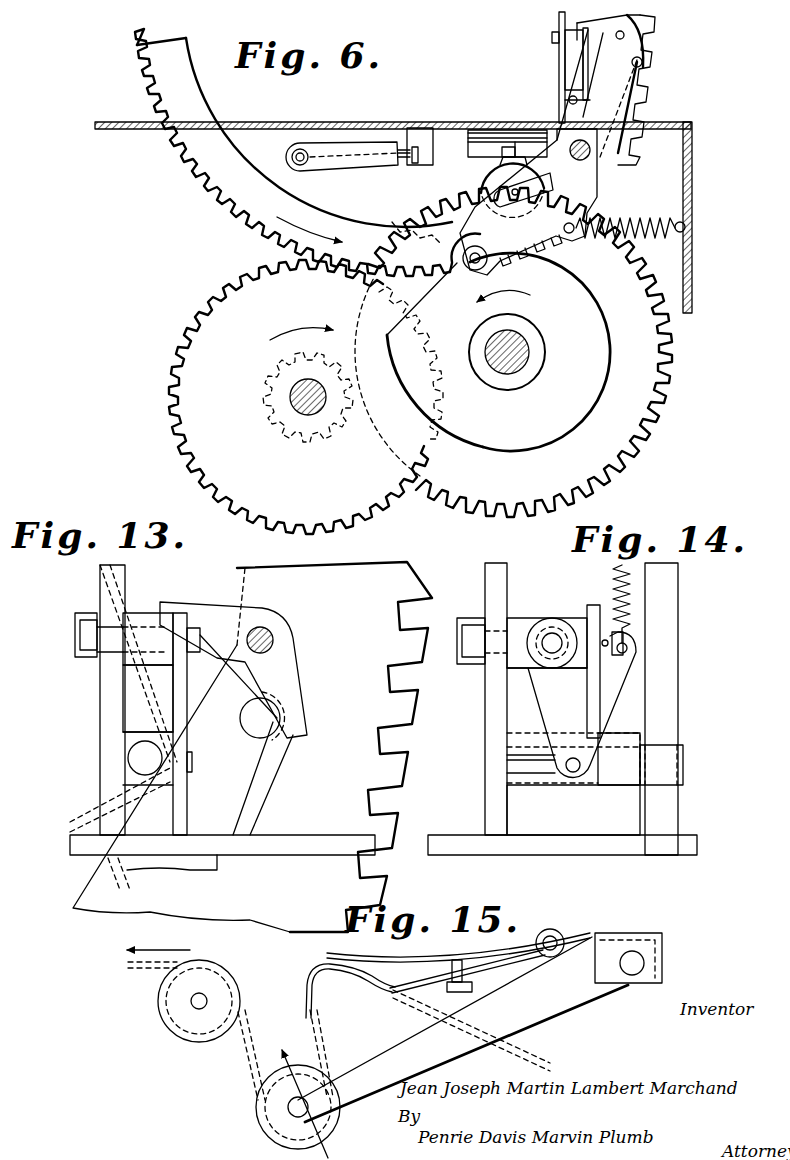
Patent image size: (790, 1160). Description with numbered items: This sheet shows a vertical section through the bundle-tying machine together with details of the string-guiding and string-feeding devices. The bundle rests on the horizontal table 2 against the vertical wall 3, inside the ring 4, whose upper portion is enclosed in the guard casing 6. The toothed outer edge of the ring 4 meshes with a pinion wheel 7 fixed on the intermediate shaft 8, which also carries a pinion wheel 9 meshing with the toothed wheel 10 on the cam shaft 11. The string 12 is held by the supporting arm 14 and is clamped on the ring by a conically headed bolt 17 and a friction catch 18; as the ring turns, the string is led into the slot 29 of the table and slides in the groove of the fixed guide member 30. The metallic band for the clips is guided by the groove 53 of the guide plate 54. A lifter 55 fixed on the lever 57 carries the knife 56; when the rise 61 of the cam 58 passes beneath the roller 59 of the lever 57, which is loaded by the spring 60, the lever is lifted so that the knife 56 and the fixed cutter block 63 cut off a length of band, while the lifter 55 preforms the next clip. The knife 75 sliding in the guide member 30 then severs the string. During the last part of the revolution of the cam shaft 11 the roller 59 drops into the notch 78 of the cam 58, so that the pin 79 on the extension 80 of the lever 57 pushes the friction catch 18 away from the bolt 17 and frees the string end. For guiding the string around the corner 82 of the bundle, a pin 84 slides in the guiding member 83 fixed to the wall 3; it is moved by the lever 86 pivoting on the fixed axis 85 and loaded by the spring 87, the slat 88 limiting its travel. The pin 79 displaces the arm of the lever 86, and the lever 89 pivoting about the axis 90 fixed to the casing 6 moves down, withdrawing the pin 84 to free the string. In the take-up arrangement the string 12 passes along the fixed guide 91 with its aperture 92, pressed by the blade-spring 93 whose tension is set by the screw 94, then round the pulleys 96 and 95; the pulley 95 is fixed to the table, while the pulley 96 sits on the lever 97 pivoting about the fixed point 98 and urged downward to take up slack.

In FIG. 6, the horizontal table 2 is at (332, 122).
In FIG. 13, the horizontal table 2 is at (280, 842).
In FIG. 14, the horizontal table 2 is at (466, 845).
In FIG. 6, the vertical wall 3 is at (560, 78).
In FIG. 13, the vertical wall 3 is at (100, 727).
In FIG. 6, the ring 4 is at (237, 185).
In FIG. 13, the ring 4 is at (340, 760).
In FIG. 14, the guard casing 6 is at (490, 777).
In FIG. 6, the pinion wheel 7 is at (295, 522).
In FIG. 6, the intermediate shaft 8 is at (298, 392).
In FIG. 6, the pinion wheel 9 is at (311, 432).
In FIG. 6, the toothed wheel 10 is at (612, 460).
In FIG. 6, the cam shaft 11 is at (532, 353).
In FIG. 6, the string 12 is at (345, 160).
In FIG. 13, the string 12 is at (158, 712).
In FIG. 15, the string 12 is at (245, 1060).
In FIG. 6, the supporting arm 14 is at (368, 160).
In FIG. 6, the conically headed bolt 17 is at (600, 160).
In FIG. 6, the friction catch 18 is at (613, 143).
In FIG. 14, the slot 29 is at (662, 845).
In FIG. 6, the fixed guide member 30 is at (427, 128).
In FIG. 6, the groove 53 is at (506, 147).
In FIG. 6, the guide plate 54 is at (528, 147).
In FIG. 6, the lifter 55 is at (496, 196).
In FIG. 6, the knife 56 is at (488, 176).
In FIG. 6, the lever 57 is at (478, 226).
In FIG. 6, the cam 58 is at (585, 408).
In FIG. 6, the roller 59 is at (462, 256).
In FIG. 6, the spring 60 is at (655, 222).
In FIG. 6, the rise 61 is at (402, 362).
In FIG. 6, the cutter block 63 is at (480, 134).
In FIG. 6, the knife 75 is at (415, 163).
In FIG. 6, the notch 78 is at (488, 280).
In FIG. 6, the pin 79 is at (644, 62).
In FIG. 13, the pin 79 is at (265, 728).
In FIG. 6, the extension 80 is at (648, 90).
In FIG. 13, the extension 80 is at (238, 800).
In FIG. 13, the corner 82 is at (90, 827).
In FIG. 13, the guiding member 83 is at (110, 788).
In FIG. 14, the guiding member 83 is at (515, 807).
In FIG. 6, the pin 84 is at (569, 100).
In FIG. 13, the pin 84 is at (138, 760).
In FIG. 14, the pin 84 is at (662, 752).
In FIG. 6, the fixed axis 85 is at (565, 38).
In FIG. 13, the fixed axis 85 is at (136, 622).
In FIG. 14, the fixed axis 85 is at (554, 625).
In FIG. 6, the lever 86 is at (583, 46).
In FIG. 13, the lever 86 is at (180, 614).
In FIG. 14, the lever 86 is at (552, 693).
In FIG. 14, the spring 87 is at (612, 576).
In FIG. 14, the slat 88 is at (523, 740).
In FIG. 6, the lever 89 is at (650, 42).
In FIG. 13, the lever 89 is at (285, 677).
In FIG. 14, the lever 89 is at (598, 716).
In FIG. 6, the axis 90 is at (618, 40).
In FIG. 13, the axis 90 is at (274, 640).
In FIG. 14, the axis 90 is at (517, 625).
In FIG. 15, the fixed guide 91 is at (330, 972).
In FIG. 15, the aperture 92 is at (396, 988).
In FIG. 15, the blade-spring 93 is at (420, 955).
In FIG. 15, the screw 94 is at (472, 985).
In FIG. 15, the pulley 95 is at (170, 1018).
In FIG. 15, the pulley 96 is at (268, 1130).
In FIG. 15, the lever 97 is at (468, 1040).
In FIG. 15, the fixed point 98 is at (632, 978).